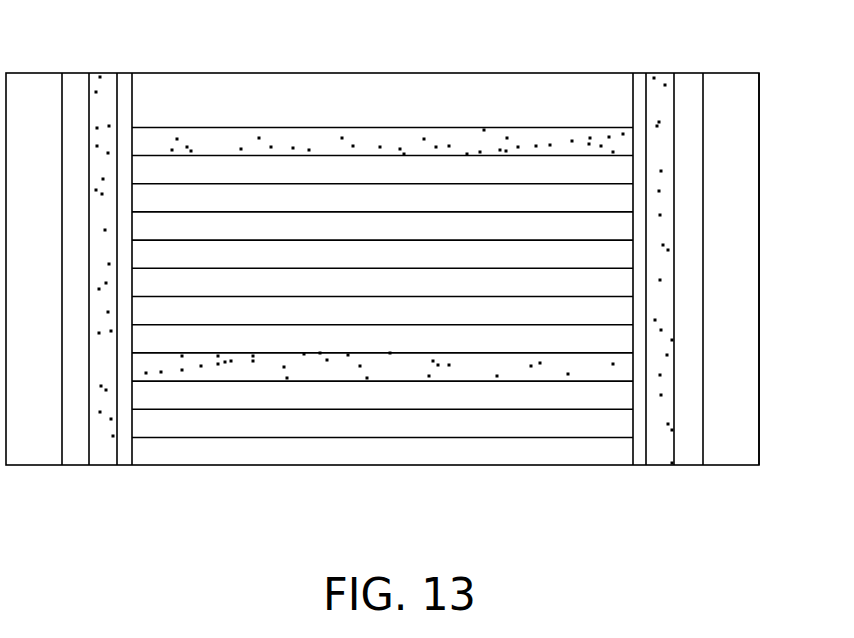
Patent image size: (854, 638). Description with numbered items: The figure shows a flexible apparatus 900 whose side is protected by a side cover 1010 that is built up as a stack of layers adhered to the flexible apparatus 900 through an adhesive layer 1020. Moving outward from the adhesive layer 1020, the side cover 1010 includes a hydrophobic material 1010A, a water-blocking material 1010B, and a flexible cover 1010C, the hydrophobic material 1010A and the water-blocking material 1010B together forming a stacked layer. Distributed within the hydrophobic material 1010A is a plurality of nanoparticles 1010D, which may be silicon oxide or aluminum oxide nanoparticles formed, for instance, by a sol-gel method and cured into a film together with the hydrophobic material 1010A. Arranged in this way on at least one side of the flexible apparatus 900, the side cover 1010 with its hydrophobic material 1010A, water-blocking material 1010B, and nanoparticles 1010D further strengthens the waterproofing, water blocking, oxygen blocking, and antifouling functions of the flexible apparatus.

The flexible apparatus 900 is at (578, 52).
The side cover 1010 is at (626, 319).
The hydrophobic material 1010A is at (665, 455).
The water-blocking material 1010B is at (688, 460).
The flexible cover 1010C is at (772, 297).
The nanoparticles 1010D is at (663, 419).
The adhesive layer 1020 is at (647, 397).